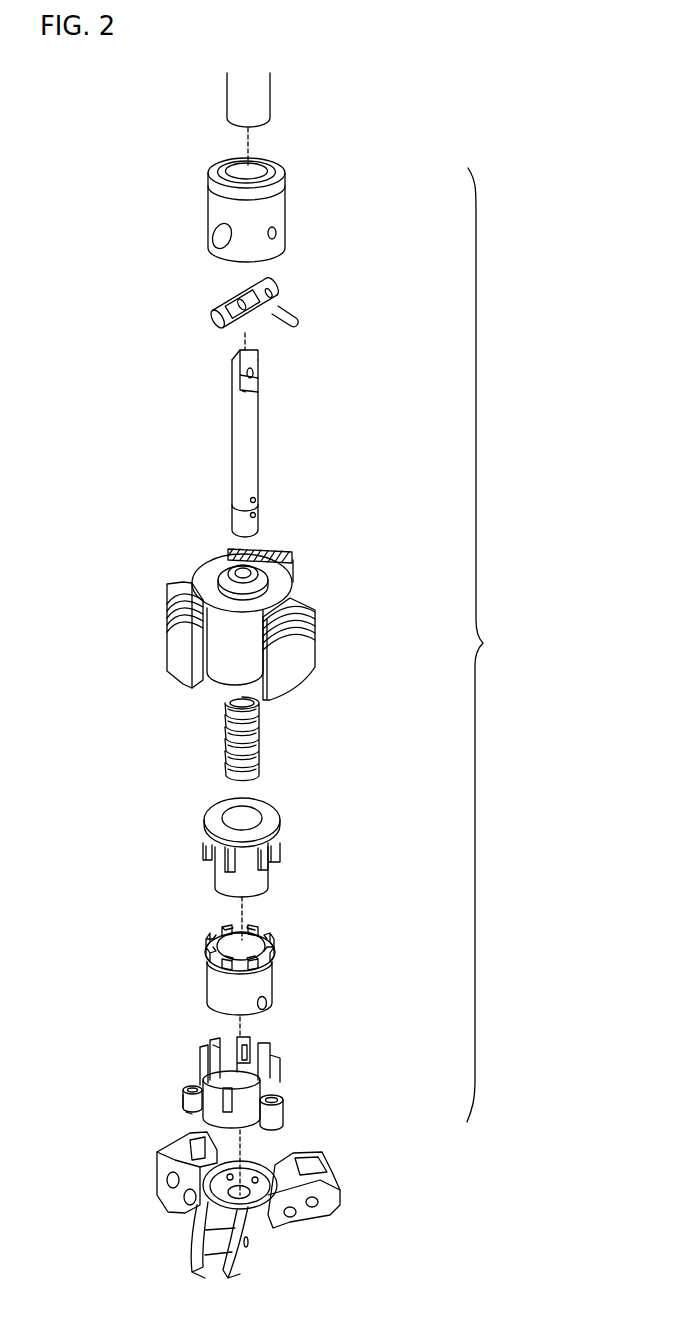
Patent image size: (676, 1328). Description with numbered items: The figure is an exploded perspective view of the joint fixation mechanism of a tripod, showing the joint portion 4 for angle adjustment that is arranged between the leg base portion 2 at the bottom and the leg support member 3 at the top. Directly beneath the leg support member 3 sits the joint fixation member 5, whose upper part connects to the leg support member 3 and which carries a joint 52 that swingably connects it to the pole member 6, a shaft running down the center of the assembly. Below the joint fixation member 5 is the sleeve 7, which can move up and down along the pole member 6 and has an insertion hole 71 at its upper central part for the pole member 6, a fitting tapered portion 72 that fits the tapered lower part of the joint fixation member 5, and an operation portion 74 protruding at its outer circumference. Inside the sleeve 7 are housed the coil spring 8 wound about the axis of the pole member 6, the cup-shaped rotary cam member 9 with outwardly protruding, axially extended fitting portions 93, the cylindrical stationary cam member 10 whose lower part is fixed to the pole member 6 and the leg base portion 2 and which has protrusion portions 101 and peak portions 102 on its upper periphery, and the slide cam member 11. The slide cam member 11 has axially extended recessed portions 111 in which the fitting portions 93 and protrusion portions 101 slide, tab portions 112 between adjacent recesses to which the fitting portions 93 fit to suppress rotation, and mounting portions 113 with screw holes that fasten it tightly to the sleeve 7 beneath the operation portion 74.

The leg base portion 2 is at (323, 1195).
The leg support member 3 is at (257, 97).
The joint portion 4 is at (492, 645).
The joint fixation member 5 is at (218, 213).
The joint 52 is at (220, 315).
The pole member 6 is at (248, 440).
The sleeve 7 is at (251, 593).
The insertion hole 71 is at (250, 573).
The fitting tapered portion 72 is at (263, 573).
The operation portion 74 is at (295, 642).
The coil spring 8 is at (260, 740).
The rotary cam member 9 is at (243, 847).
The fitting portions 93 is at (270, 855).
The stationary cam member 10 is at (253, 965).
The protrusion portions 101 is at (270, 972).
The peak portions 102 is at (267, 930).
The slide cam member 11 is at (220, 1083).
The recessed portions 111 is at (232, 1108).
The tab portions 112 is at (263, 1083).
The mounting portions 113 is at (203, 1080).